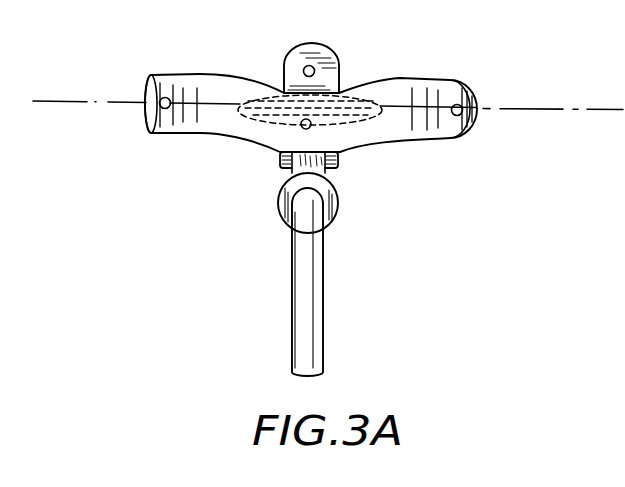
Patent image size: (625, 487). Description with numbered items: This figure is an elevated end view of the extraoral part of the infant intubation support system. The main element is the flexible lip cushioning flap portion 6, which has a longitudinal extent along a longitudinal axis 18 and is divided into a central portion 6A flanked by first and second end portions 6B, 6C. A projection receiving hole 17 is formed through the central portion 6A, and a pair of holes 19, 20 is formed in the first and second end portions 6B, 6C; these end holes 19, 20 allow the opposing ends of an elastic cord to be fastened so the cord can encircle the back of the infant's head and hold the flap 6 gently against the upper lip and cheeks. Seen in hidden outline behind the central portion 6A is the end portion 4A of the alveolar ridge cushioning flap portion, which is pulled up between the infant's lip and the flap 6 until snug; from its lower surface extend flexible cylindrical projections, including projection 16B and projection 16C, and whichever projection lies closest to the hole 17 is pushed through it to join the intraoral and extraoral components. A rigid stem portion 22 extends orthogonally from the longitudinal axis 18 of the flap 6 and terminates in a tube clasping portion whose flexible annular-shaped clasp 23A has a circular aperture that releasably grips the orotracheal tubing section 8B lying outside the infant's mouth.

The longitudinal axis 18 is at (65, 101).
The flexible lip cushioning flap portion 6 is at (211, 124).
The first end portion 6B is at (148, 87).
The second end portion 6C is at (474, 104).
The central portion 6A is at (289, 116).
The hole 19 is at (153, 125).
The hole 20 is at (462, 104).
The end portion of the alveolar ridge cushioning flap portion 4A is at (325, 50).
The projection 16C is at (305, 68).
The projection receiving hole 17 is at (311, 120).
The projection 16B is at (285, 150).
The rigid stem portion 22 is at (340, 168).
The flexible annular-shaped clasp 23A is at (338, 205).
The orotracheal tubing section 8B is at (323, 308).